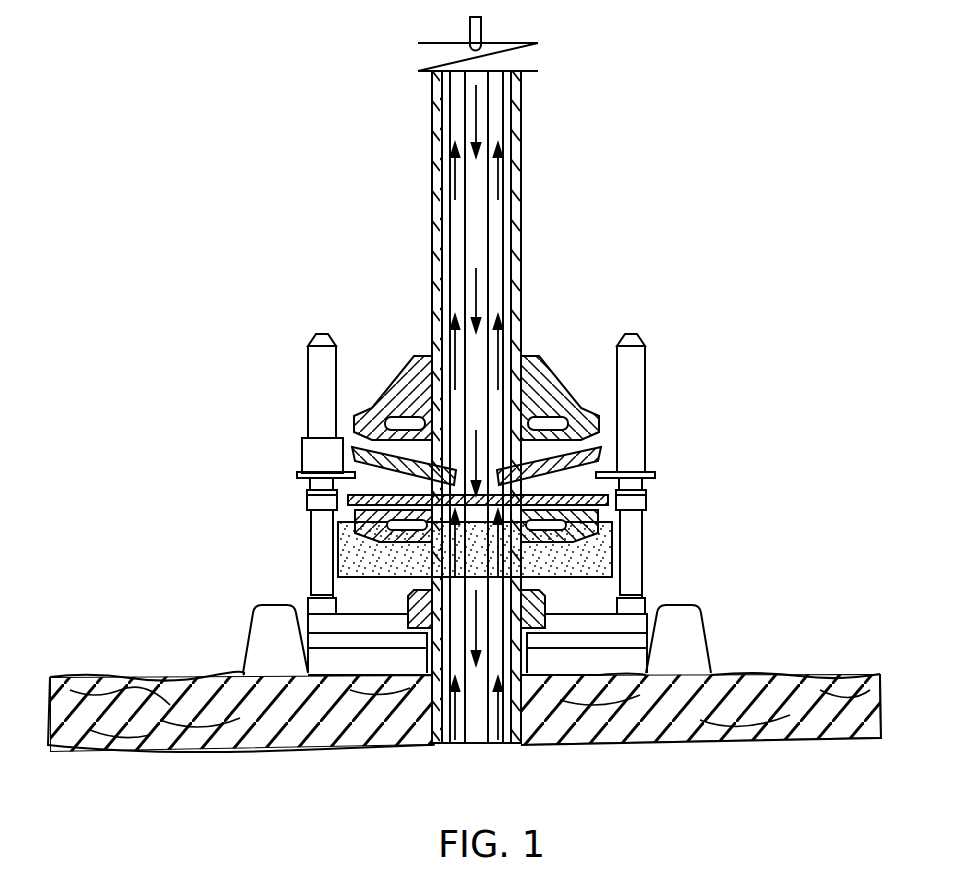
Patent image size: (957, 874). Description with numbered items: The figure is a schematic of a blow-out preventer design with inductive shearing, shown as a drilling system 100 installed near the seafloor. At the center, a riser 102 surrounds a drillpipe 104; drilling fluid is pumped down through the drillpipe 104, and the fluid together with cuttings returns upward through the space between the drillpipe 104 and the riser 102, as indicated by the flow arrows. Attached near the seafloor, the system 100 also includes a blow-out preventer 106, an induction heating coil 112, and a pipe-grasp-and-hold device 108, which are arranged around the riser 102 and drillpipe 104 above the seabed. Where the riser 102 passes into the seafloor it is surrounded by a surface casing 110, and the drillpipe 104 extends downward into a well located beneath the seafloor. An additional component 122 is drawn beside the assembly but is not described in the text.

The drilling system 100 is at (340, 64).
The riser 102 is at (505, 105).
The drillpipe 104 is at (475, 182).
The blow-out preventer 106 is at (600, 423).
The pipe-grasp-and-hold device 108 is at (338, 555).
The surface casing 110 is at (523, 725).
The induction heating coil 112 is at (305, 475).
The actuator box 122 is at (302, 438).